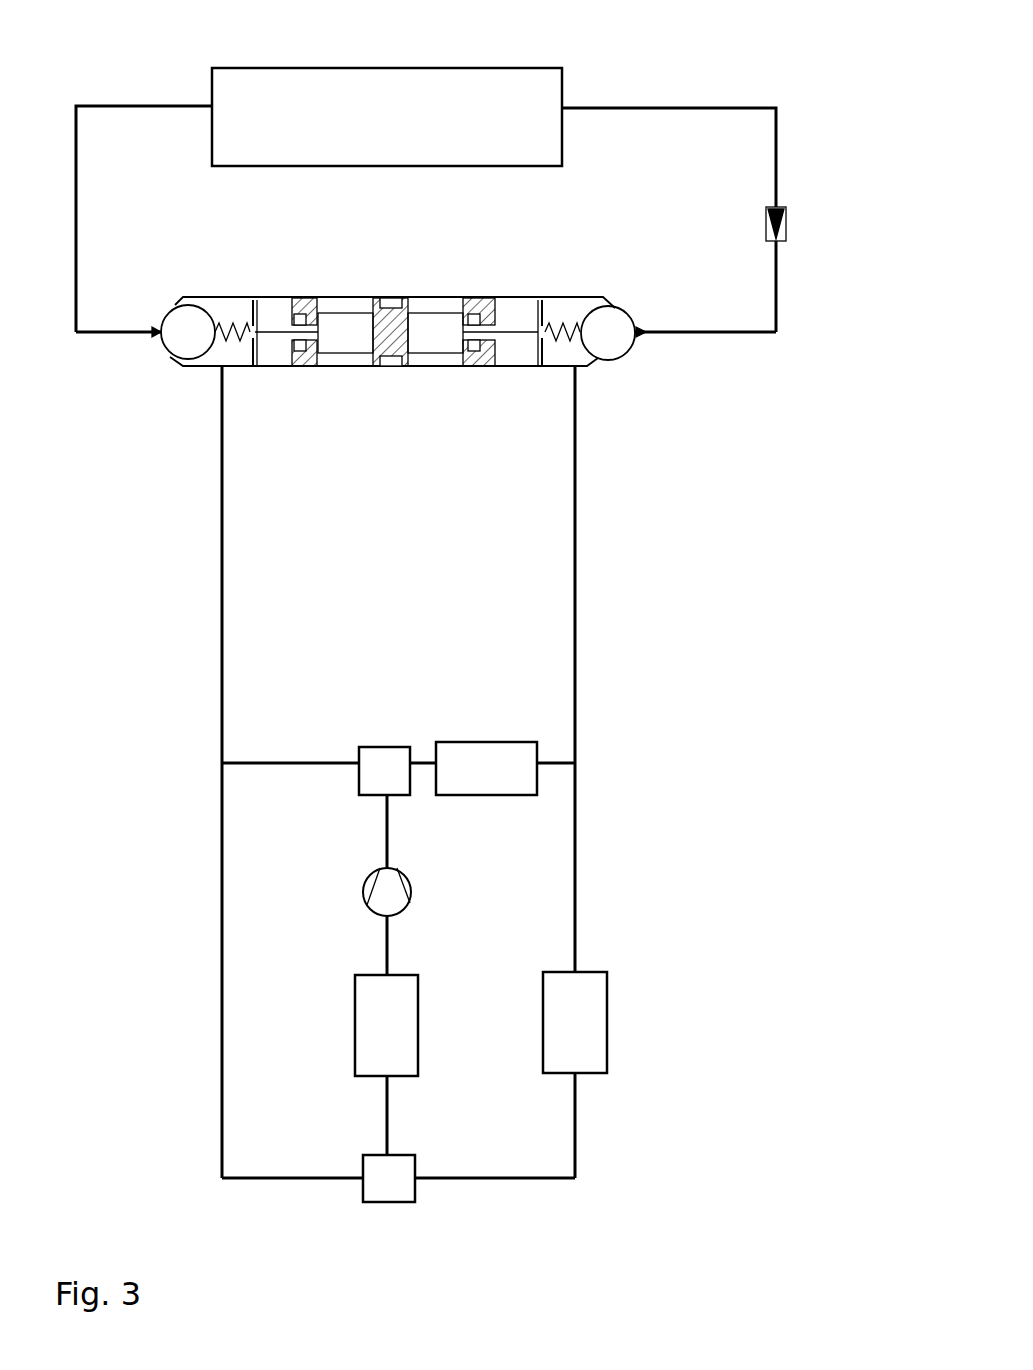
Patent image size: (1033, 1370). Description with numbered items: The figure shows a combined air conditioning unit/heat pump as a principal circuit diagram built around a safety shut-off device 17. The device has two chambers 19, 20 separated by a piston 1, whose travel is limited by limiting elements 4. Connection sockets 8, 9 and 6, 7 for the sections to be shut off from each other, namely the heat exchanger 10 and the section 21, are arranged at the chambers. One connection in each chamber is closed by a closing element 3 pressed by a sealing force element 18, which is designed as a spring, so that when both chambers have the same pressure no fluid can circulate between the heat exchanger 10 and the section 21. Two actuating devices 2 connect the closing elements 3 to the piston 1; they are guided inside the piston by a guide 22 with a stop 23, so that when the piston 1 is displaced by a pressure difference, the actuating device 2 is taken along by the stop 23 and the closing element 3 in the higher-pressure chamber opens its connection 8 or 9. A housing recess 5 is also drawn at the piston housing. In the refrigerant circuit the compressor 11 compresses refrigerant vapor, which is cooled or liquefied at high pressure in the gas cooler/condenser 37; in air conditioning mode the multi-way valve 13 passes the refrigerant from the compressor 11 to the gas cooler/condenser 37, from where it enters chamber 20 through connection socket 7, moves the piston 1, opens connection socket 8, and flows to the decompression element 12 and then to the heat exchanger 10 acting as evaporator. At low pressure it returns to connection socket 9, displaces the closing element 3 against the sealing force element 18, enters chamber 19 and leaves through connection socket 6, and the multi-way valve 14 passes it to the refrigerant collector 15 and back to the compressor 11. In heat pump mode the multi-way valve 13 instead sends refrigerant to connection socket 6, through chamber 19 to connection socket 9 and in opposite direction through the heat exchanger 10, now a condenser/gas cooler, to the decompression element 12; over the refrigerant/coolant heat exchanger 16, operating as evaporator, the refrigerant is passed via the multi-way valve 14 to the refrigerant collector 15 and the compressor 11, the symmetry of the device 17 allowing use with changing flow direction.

The piston 1 is at (330, 305).
The actuating device 2 is at (277, 330).
The closing element 3 is at (188, 332).
The limiting element 4 is at (542, 307).
The housing recess 5 is at (385, 304).
The connection socket 6 is at (223, 390).
The connection socket 7 is at (575, 390).
The connection socket 8 is at (717, 330).
The connection socket 9 is at (105, 332).
The heat exchanger 10 is at (503, 108).
The compressor 11 is at (397, 897).
The decompression element 12 is at (789, 222).
The multi-way valve 13 is at (383, 763).
The multi-way valve 14 is at (387, 1178).
The refrigerant collector 15 is at (397, 1026).
The refrigerant/coolant heat exchanger 16 is at (575, 1021).
The safety shut-off device 17 is at (322, 425).
The sealing force element 18 is at (237, 329).
The chamber 19 is at (237, 352).
The chamber 20 is at (568, 352).
The section 21 is at (223, 428).
The guide 22 is at (442, 316).
The stop 23 is at (475, 348).
The gas cooler/condenser 37 is at (487, 762).